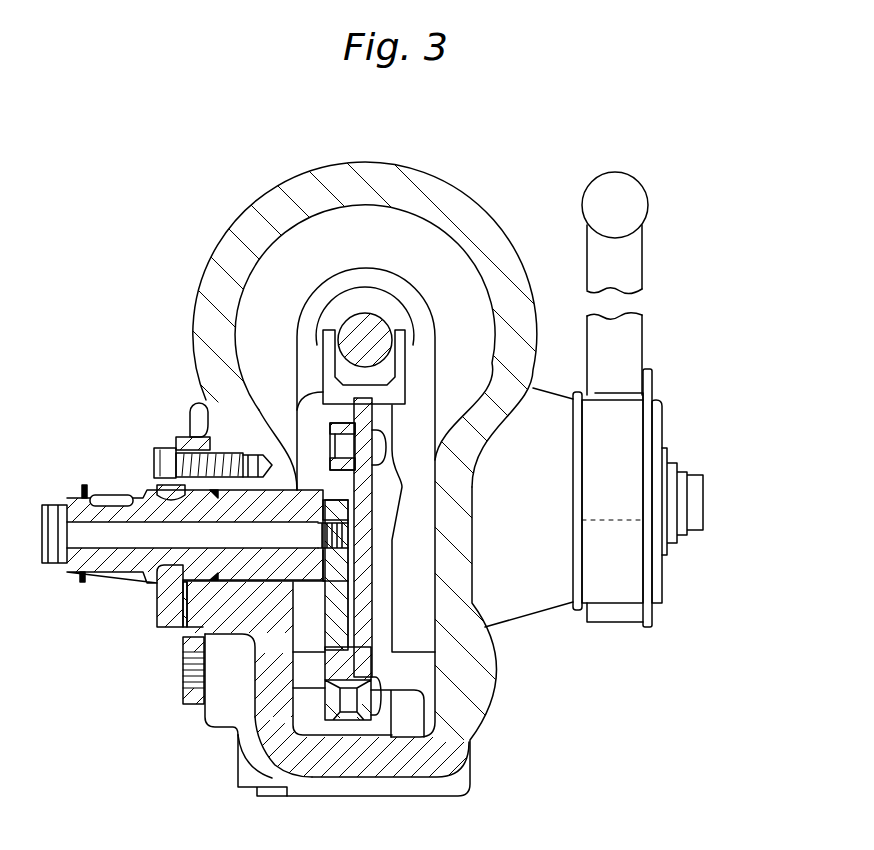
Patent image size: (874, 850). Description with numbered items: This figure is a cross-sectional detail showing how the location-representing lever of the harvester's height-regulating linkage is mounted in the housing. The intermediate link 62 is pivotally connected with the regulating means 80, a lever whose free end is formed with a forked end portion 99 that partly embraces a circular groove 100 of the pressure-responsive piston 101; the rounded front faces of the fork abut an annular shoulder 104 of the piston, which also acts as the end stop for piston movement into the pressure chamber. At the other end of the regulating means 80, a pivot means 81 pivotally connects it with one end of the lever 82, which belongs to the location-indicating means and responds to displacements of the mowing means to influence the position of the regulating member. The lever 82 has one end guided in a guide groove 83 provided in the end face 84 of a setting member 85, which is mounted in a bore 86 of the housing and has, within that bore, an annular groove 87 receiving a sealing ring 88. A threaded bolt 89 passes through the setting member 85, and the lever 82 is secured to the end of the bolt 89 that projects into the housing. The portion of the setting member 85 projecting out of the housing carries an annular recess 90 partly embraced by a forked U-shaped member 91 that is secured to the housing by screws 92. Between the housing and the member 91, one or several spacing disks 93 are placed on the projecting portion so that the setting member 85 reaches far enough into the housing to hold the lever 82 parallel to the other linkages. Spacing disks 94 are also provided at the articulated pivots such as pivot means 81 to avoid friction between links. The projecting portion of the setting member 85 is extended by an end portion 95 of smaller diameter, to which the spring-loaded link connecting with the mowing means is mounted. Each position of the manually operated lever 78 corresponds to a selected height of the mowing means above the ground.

The intermediate link 62 is at (334, 426).
The manually operated lever 78 is at (650, 248).
The regulating means 80 is at (373, 483).
The pivot means 81 is at (337, 698).
The lever 82 is at (337, 662).
The guide groove 83 is at (327, 592).
The end face 84 is at (325, 496).
The setting member 85 is at (268, 568).
The bore 86 is at (330, 575).
The annular groove 87 is at (178, 567).
The sealing ring 88 is at (187, 600).
The threaded bolt 89 is at (128, 537).
The annular recess 90 is at (155, 582).
The forked U-shaped member 91 is at (176, 443).
The screws 92 is at (158, 465).
The spacing disks 93 is at (190, 436).
The spacing disks 94 is at (348, 724).
The end portion 95 is at (95, 562).
The forked end portion 99 is at (397, 392).
The circular groove 100 is at (387, 317).
The pressure-responsive piston 101 is at (380, 328).
The annular shoulder 104 is at (332, 305).